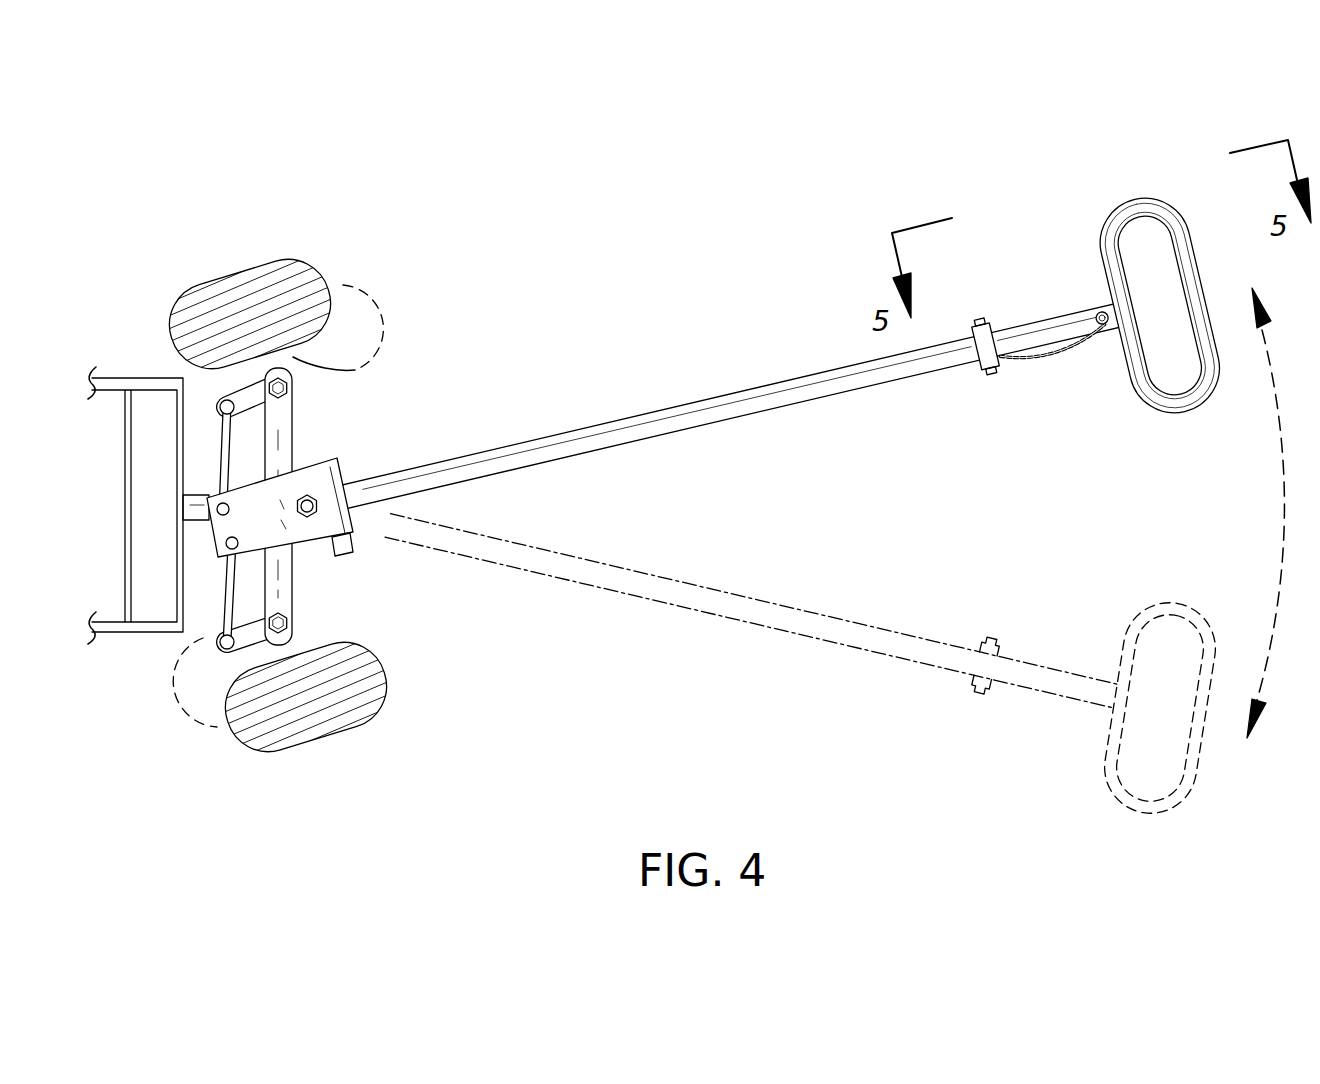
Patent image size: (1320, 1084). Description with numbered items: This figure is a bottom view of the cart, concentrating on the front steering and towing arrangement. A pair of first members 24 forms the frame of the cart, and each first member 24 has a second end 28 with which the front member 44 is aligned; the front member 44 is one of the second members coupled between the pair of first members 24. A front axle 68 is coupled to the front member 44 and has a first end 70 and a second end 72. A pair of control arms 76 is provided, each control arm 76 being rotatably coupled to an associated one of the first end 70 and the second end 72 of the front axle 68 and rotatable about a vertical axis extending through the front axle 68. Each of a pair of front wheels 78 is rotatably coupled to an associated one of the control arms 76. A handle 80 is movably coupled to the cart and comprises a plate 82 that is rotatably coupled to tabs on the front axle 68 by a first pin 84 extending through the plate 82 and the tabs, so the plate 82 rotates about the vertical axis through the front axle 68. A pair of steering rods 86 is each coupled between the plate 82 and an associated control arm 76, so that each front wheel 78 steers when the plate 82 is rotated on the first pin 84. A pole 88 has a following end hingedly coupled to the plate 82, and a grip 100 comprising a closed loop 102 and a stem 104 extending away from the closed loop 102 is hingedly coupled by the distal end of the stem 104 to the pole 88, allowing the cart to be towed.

The first member 24 is at (124, 378).
The second end 28 is at (183, 378).
The front member 44 is at (188, 450).
The front axle 68 is at (300, 456).
The first end 70 is at (279, 367).
The second end 72 is at (280, 652).
The control arm 76 is at (243, 388).
The front wheel 78 is at (336, 286).
The handle 80 is at (773, 472).
The plate 82 is at (298, 525).
The first pin 84 is at (312, 510).
The steering rod 86 is at (288, 408).
The pole 88 is at (730, 406).
The grip 100 is at (1159, 305).
The closed loop 102 is at (1160, 305).
The stem 104 is at (1055, 338).